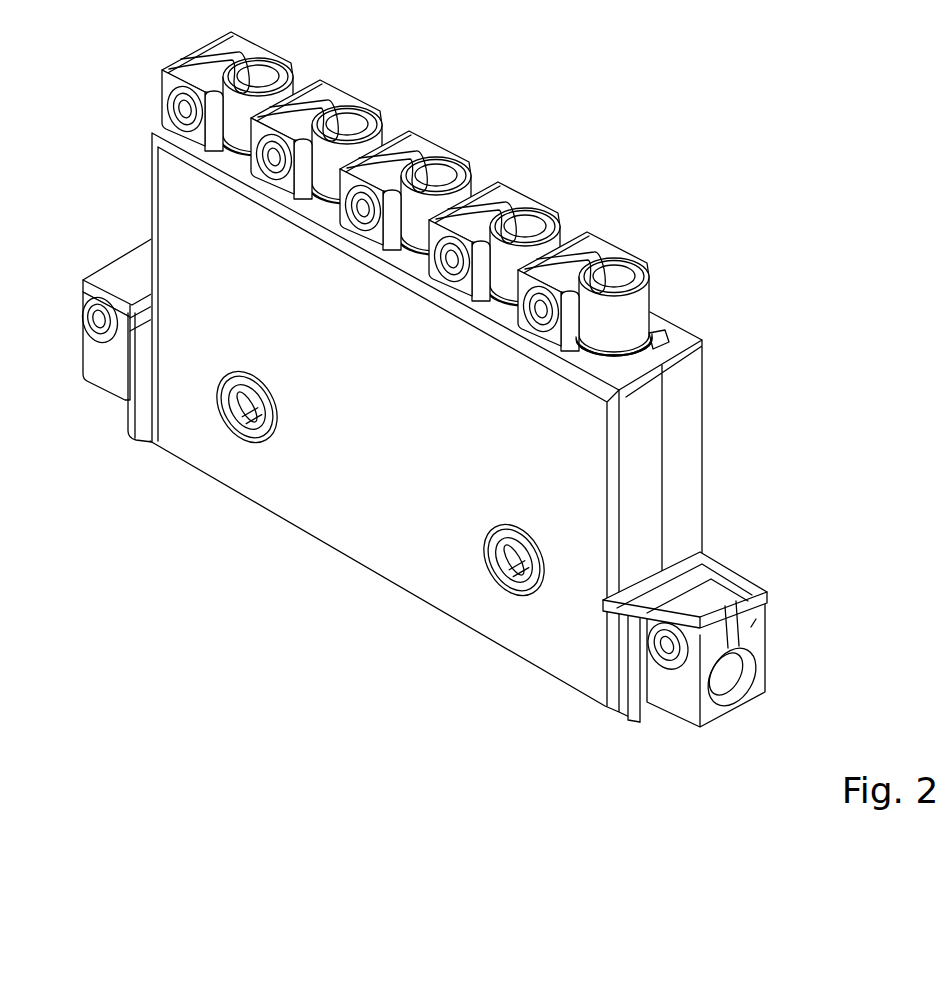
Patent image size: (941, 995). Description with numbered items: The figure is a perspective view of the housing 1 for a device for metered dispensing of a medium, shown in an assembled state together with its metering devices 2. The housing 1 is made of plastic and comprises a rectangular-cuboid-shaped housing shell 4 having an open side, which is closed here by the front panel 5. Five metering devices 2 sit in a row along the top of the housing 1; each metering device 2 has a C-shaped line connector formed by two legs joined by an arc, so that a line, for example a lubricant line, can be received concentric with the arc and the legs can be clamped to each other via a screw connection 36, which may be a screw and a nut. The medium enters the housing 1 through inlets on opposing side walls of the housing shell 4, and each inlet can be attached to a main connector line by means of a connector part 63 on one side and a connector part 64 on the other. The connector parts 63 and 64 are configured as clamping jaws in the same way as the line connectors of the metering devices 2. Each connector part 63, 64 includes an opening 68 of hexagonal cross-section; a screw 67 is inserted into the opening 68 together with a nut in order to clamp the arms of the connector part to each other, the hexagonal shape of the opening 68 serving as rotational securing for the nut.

The housing 1 is at (474, 430).
The metering device 2 is at (600, 247).
The screw connection 36 is at (567, 336).
The housing shell 4 is at (692, 473).
The front panel 5 is at (467, 485).
The connector part 63 is at (113, 272).
The connector part 64 is at (756, 622).
The screw 67 is at (660, 677).
The opening 68 is at (697, 677).